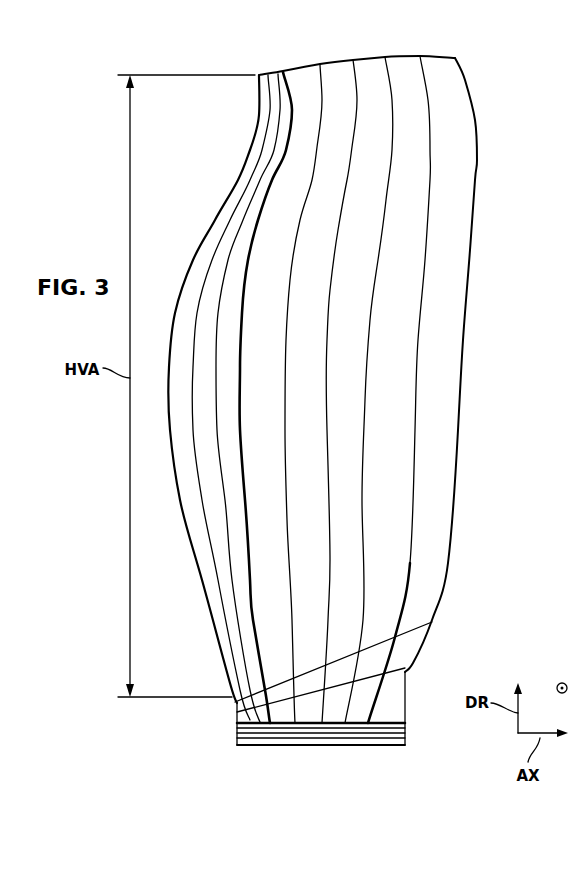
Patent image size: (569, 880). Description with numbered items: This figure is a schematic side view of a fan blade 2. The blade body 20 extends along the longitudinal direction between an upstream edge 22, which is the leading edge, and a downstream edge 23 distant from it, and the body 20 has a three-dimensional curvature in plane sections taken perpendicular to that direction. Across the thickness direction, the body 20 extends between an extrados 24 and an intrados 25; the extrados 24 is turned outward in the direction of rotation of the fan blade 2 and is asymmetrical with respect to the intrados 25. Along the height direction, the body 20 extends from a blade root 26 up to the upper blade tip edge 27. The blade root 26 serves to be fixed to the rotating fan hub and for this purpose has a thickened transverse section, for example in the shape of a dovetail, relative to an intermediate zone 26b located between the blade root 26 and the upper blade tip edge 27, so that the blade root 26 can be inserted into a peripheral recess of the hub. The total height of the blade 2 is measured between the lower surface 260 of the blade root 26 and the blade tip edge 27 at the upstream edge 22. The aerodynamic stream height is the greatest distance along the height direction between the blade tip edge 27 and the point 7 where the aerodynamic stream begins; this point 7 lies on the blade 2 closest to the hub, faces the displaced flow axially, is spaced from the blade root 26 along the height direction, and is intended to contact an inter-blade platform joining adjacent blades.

The fan blade 2 is at (484, 449).
The point where the aerodynamic stream begins 7 is at (235, 704).
The body 20 is at (392, 412).
The upstream edge 22 is at (185, 523).
The downstream edge 23 is at (462, 362).
The extrados 24 is at (398, 310).
The intrados 25 is at (489, 204).
The blade root 26 is at (254, 733).
The intermediate zone 26b is at (360, 712).
The upper blade tip edge 27 is at (337, 57).
The lower surface of the blade root 260 is at (297, 746).